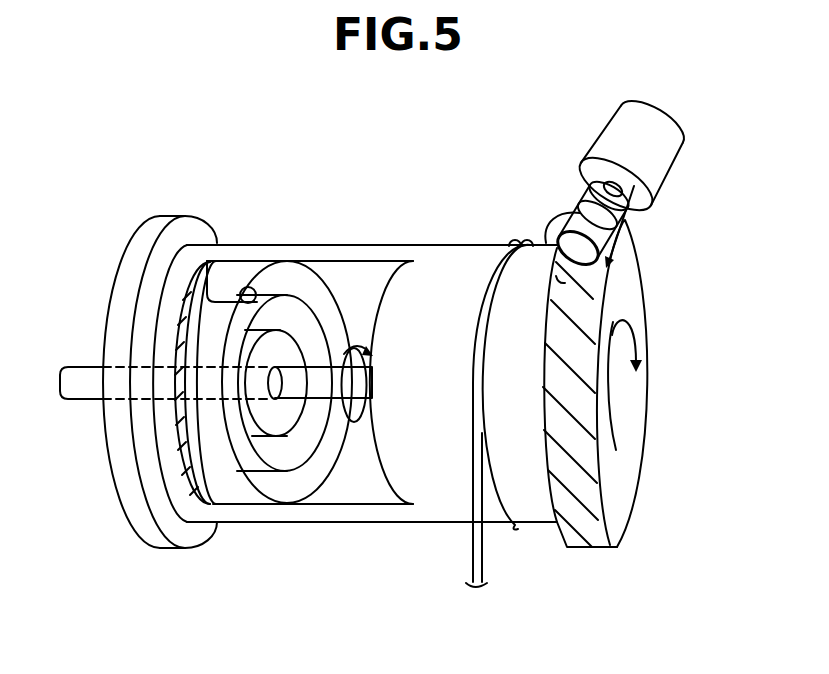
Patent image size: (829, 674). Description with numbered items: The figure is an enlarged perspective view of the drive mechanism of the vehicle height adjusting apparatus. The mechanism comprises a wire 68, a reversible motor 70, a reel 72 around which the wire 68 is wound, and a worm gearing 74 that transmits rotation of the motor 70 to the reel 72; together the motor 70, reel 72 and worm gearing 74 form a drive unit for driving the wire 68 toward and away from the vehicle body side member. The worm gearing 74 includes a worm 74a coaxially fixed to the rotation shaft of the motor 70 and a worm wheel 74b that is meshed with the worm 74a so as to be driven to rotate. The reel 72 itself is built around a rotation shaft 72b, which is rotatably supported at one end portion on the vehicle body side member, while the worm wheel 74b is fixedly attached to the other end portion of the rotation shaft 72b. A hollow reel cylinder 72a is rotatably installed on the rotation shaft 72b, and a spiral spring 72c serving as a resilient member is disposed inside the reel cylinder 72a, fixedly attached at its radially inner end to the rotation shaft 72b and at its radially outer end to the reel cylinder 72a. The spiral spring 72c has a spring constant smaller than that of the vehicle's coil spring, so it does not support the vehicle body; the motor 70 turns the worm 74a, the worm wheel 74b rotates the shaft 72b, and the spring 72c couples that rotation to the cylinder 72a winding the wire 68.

The wire 68 is at (478, 562).
The reversible motor 70 is at (672, 132).
The reel 72 is at (308, 403).
The reel cylinder 72a is at (323, 245).
The rotation shaft 72b is at (313, 382).
The spiral spring 72c is at (226, 480).
The worm gearing 74 is at (520, 339).
The worm 74a is at (576, 230).
The worm wheel 74b is at (557, 247).